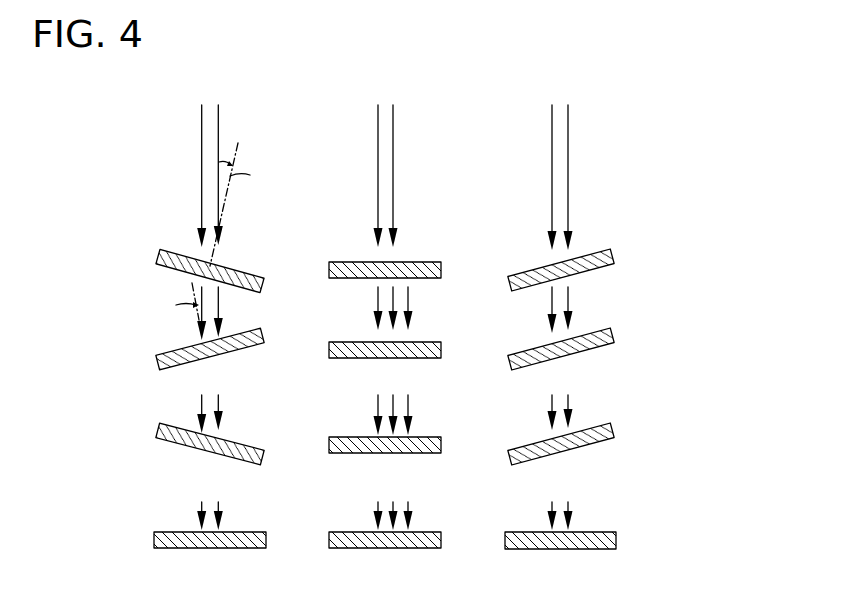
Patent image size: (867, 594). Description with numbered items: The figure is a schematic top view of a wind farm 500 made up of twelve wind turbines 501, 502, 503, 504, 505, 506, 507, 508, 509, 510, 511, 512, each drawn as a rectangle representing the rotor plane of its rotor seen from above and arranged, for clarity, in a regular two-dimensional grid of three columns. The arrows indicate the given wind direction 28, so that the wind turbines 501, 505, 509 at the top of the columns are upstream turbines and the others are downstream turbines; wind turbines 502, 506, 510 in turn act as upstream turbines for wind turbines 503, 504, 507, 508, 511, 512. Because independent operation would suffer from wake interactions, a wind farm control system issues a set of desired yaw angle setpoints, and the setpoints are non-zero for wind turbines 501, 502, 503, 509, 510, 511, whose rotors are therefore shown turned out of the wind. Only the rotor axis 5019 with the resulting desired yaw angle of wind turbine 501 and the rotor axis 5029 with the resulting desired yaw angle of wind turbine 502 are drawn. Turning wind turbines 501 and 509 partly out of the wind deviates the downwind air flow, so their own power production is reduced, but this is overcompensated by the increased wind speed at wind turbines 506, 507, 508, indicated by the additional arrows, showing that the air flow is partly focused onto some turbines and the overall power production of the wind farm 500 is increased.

The wind direction 28 is at (219, 118).
The wind farm 500 is at (659, 161).
The wind turbine 501 is at (162, 260).
The wind turbine 502 is at (232, 353).
The wind turbine 503 is at (167, 435).
The wind turbine 504 is at (242, 537).
The wind turbine 505 is at (435, 272).
The wind turbine 506 is at (435, 352).
The wind turbine 507 is at (435, 447).
The wind turbine 508 is at (435, 542).
The wind turbine 509 is at (608, 256).
The wind turbine 510 is at (608, 335).
The wind turbine 511 is at (608, 430).
The wind turbine 512 is at (605, 538).
The rotor axis 5019 is at (225, 200).
The rotor axis 5029 is at (190, 313).